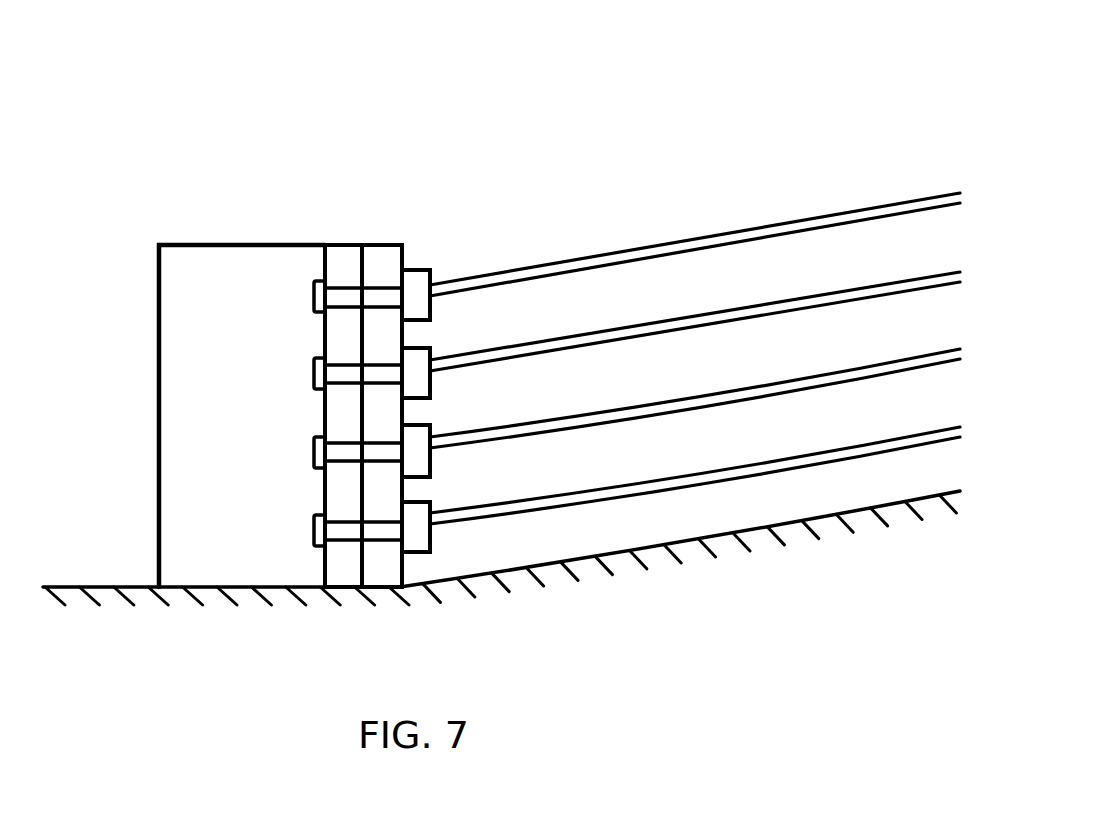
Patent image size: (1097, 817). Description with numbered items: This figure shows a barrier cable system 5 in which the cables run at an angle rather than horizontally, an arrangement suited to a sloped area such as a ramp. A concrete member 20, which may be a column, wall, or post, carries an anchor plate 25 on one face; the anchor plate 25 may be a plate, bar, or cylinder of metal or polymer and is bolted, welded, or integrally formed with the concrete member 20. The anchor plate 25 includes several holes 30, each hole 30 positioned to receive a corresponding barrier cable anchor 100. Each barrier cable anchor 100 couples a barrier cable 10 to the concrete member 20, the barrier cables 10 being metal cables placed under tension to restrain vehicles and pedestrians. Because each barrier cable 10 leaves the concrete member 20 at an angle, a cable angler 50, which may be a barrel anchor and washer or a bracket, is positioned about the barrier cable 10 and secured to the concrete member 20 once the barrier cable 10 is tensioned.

The barrier cable system 5 is at (472, 68).
The barrier cable 10 is at (797, 219).
The concrete member 20 is at (188, 242).
The anchor plate 25 is at (355, 242).
The hole 30 is at (348, 287).
The cable angler 50 is at (425, 268).
The barrier cable anchor 100 is at (311, 298).